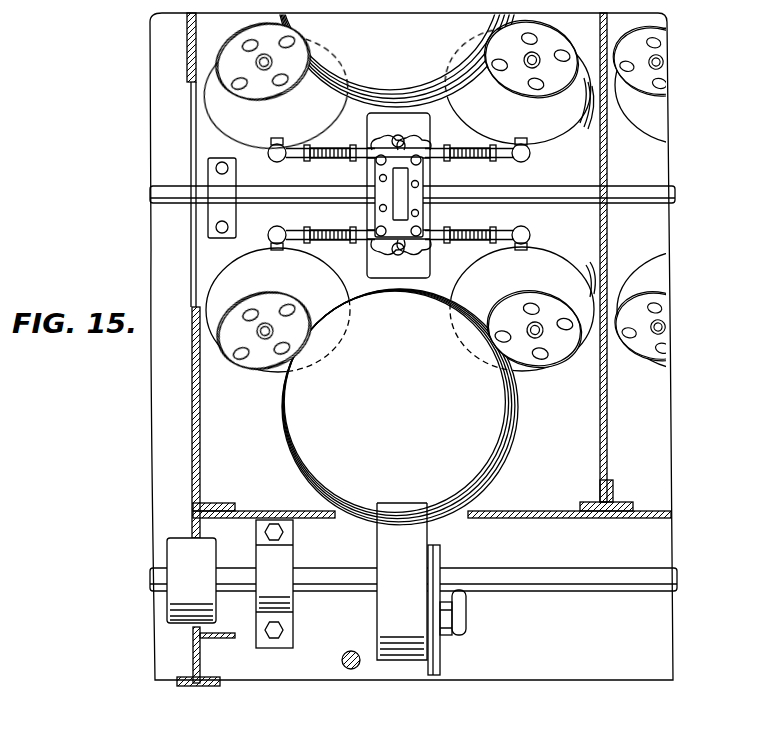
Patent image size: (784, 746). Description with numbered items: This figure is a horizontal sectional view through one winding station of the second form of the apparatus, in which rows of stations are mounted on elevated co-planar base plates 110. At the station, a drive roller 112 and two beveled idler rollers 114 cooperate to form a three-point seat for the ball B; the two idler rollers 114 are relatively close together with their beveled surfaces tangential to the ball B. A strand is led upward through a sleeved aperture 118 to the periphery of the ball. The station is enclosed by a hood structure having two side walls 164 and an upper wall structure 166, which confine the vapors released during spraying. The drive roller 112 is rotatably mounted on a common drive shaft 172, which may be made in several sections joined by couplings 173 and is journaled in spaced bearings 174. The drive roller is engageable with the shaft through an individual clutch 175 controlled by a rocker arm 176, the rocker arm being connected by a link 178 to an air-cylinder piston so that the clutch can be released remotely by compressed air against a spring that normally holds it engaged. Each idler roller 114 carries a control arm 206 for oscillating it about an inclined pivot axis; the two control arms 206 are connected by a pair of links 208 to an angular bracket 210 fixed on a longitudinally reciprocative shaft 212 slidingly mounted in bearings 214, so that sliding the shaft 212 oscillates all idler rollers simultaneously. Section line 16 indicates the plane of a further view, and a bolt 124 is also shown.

The base plate 110 is at (664, 652).
The drive roller 112 is at (417, 650).
The beveled idler roller 114 is at (206, 112).
The sleeved aperture 118 is at (398, 134).
The bolt 124 is at (351, 669).
The side wall 164 is at (191, 457).
The upper wall structure 166 is at (572, 518).
The drive shaft 172 is at (597, 577).
The coupling 173 is at (167, 605).
The bearing 174 is at (275, 603).
The clutch 175 is at (425, 611).
The rocker arm 176 is at (447, 647).
The link 178 is at (464, 636).
The control arm 206 is at (277, 143).
The link 208 is at (338, 159).
The angular bracket 210 is at (418, 170).
The longitudinally reciprocative shaft 212 is at (645, 188).
The bearing 214 is at (208, 214).
The section line 16- 16 is at (611, 261).
The ball B is at (480, 448).